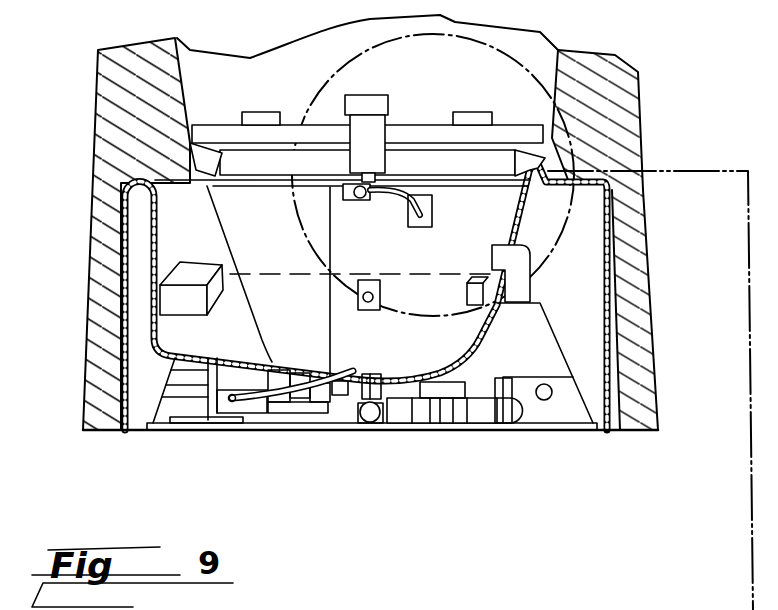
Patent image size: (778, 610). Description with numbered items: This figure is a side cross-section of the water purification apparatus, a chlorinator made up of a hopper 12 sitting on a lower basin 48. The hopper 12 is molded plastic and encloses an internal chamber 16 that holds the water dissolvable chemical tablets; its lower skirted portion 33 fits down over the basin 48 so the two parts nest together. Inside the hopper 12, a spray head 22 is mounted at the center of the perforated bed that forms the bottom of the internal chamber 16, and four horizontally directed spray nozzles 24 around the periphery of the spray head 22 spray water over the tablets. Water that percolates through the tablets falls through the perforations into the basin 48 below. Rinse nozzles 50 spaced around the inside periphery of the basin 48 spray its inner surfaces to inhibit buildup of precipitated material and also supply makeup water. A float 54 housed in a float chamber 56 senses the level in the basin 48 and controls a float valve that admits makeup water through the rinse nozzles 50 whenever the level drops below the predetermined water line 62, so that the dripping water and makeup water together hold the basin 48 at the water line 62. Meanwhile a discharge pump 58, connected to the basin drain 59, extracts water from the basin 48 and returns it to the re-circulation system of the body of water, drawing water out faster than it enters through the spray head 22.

The hopper 12 is at (646, 100).
The internal chamber 16 is at (367, 54).
The spray head 22 is at (304, 596).
The spray nozzles 24 is at (482, 596).
The lower skirted portion 33 is at (661, 383).
The basin 48 is at (133, 428).
The rinse nozzles 50 is at (378, 277).
The float 54 is at (182, 268).
The float chamber 56 is at (250, 323).
The discharge pump 58 is at (445, 420).
The basin drain 59 is at (372, 375).
The water line 62 is at (272, 274).